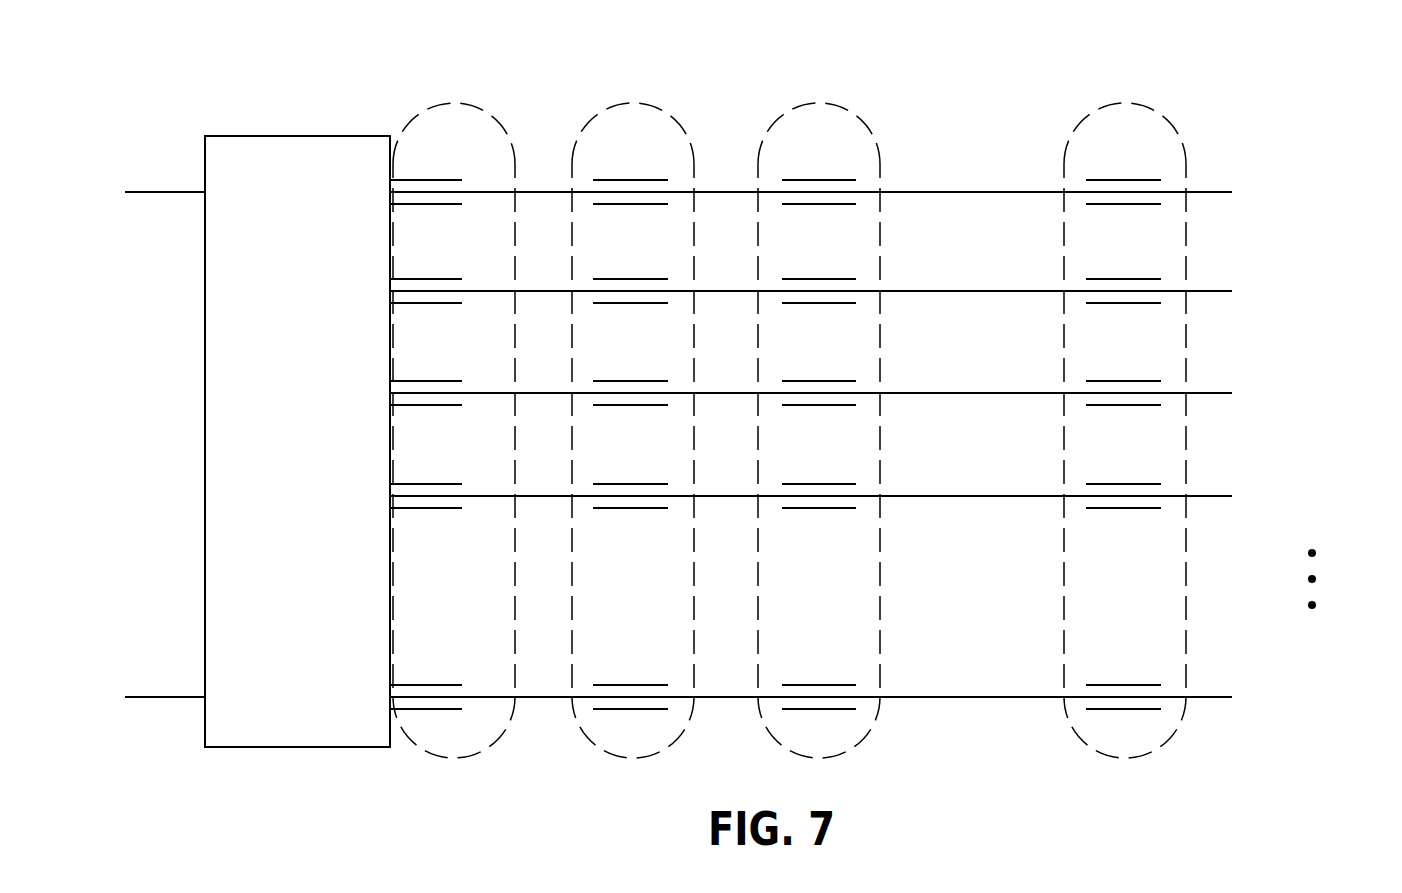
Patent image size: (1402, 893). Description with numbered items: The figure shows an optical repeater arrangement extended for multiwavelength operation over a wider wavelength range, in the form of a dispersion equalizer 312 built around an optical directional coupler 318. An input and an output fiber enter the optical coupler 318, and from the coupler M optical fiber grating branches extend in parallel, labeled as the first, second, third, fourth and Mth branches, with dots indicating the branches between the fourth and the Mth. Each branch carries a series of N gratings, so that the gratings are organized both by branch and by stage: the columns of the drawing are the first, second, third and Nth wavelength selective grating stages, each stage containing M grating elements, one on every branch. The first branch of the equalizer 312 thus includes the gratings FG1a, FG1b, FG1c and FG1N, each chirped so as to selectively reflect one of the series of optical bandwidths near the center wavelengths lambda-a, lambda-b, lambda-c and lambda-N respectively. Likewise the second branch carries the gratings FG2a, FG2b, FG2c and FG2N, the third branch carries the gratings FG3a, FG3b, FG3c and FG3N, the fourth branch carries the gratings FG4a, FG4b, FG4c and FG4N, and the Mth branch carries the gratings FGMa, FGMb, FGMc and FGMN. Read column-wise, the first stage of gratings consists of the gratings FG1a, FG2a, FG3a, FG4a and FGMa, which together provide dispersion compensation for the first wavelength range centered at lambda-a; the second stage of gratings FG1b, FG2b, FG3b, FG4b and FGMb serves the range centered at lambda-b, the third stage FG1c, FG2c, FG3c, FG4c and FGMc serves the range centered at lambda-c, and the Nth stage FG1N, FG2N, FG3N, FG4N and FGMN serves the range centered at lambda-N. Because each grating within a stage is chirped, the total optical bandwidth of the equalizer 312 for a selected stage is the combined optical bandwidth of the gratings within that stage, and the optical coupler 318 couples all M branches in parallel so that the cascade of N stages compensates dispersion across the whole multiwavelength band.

The dispersion equalizer 312 is at (350, 105).
The optical coupler 318 is at (205, 503).
The grating FG1a is at (435, 177).
The grating FG2a is at (435, 276).
The grating FG3a is at (435, 378).
The grating FG4a is at (435, 481).
The grating FGMa is at (437, 683).
The grating FG1b is at (630, 177).
The grating FG2b is at (630, 276).
The grating FG3b is at (630, 378).
The grating FG4b is at (630, 481).
The grating FGMb is at (630, 683).
The grating FG1c is at (819, 177).
The grating FG2c is at (819, 276).
The grating FG3c is at (819, 378).
The grating FG4c is at (819, 481).
The grating FGMc is at (819, 683).
The grating FG1N is at (1123, 177).
The grating FG2N is at (1123, 276).
The grating FG3N is at (1123, 378).
The grating FG4N is at (1123, 481).
The grating FGMN is at (1123, 683).